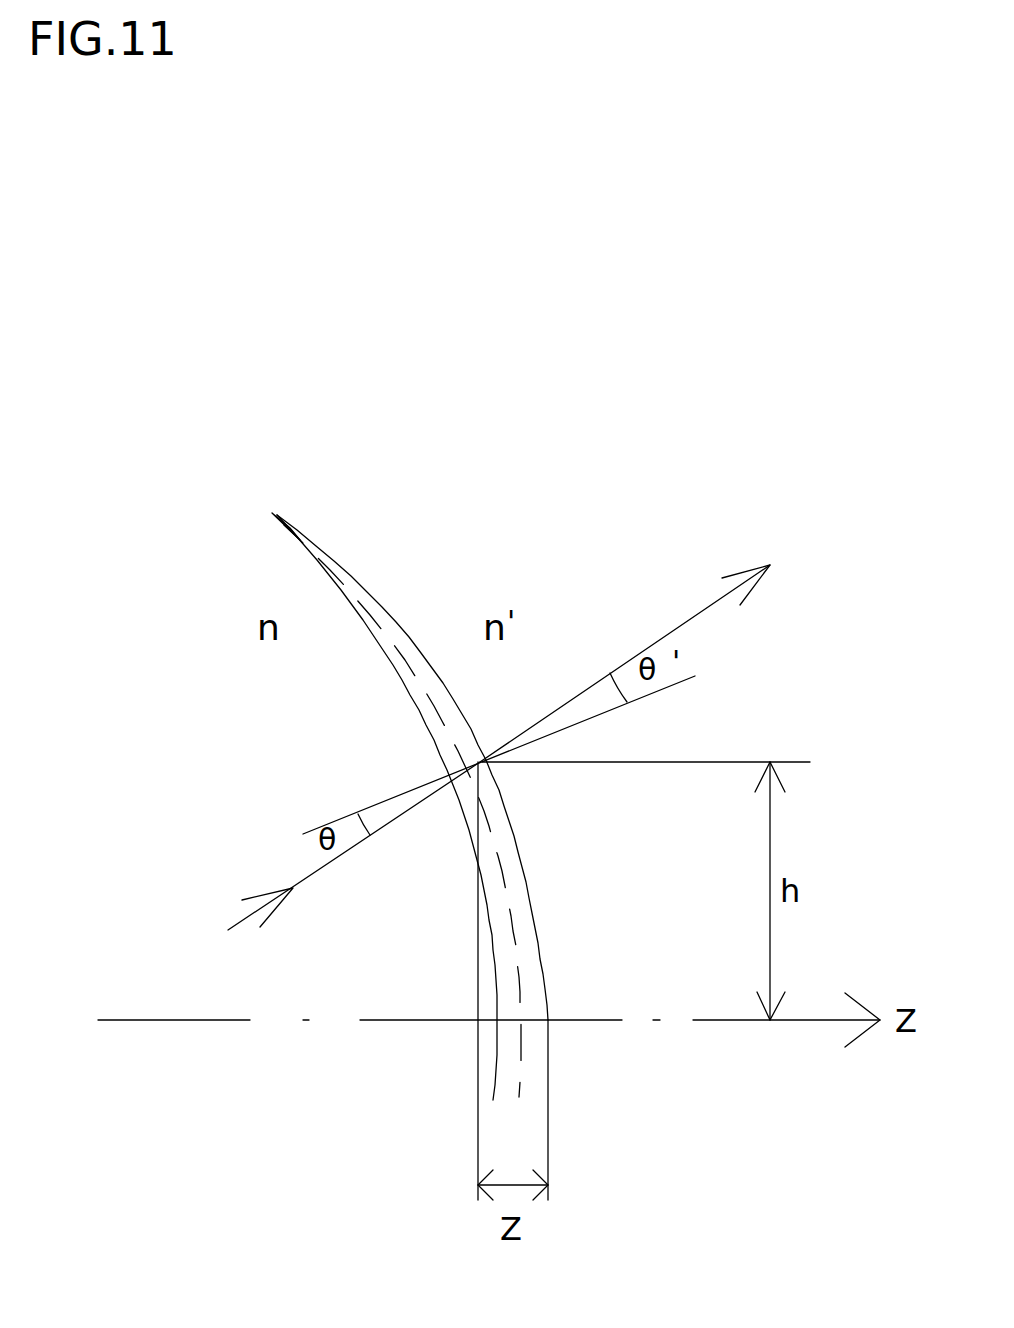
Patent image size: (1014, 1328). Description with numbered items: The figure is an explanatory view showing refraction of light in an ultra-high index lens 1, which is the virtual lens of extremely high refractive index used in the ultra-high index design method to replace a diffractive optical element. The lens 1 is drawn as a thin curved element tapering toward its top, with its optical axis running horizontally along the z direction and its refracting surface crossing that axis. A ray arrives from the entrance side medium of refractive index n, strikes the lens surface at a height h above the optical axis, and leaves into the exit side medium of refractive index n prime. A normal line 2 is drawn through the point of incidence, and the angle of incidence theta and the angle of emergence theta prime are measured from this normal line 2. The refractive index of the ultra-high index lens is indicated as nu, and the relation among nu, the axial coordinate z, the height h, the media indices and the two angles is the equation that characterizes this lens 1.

The ultra-high index lens 1 is at (335, 565).
The normal line 2 is at (333, 822).
The refractive index of the ultra-high index lens nu is at (402, 618).